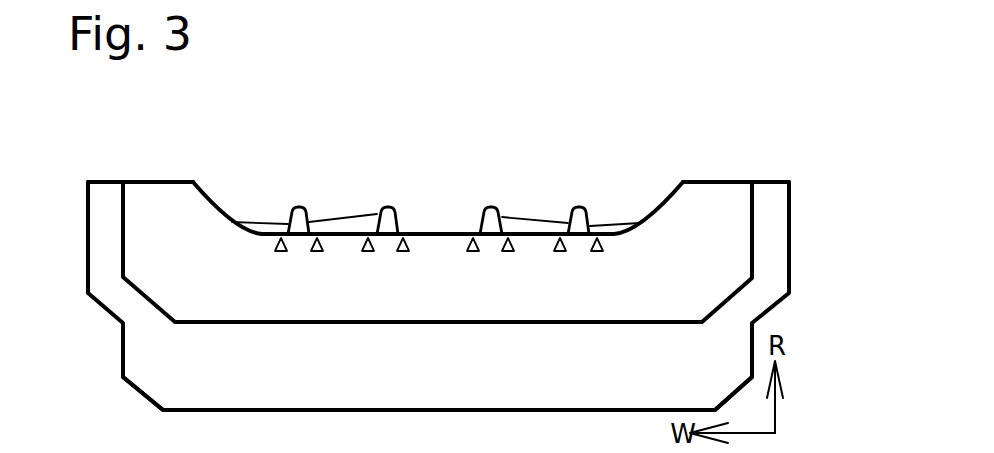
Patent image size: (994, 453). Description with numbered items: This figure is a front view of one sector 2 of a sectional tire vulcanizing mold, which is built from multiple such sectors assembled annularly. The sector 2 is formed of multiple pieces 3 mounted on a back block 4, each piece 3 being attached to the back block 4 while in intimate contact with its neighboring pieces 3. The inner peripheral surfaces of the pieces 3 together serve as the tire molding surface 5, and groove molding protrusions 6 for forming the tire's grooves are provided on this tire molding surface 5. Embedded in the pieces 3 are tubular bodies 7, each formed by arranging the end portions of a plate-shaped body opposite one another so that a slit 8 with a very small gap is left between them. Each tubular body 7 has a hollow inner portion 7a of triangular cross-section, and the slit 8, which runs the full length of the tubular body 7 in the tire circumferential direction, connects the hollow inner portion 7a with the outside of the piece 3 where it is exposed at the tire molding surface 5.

The sector 2 is at (710, 148).
The piece 3 is at (164, 180).
The back block 4 is at (170, 383).
The tire molding surface 5 is at (327, 220).
The groove molding protrusion 6 is at (263, 228).
The tubular body 7 is at (560, 330).
The hollow inner portion 7a is at (602, 287).
The slit 8 is at (287, 231).